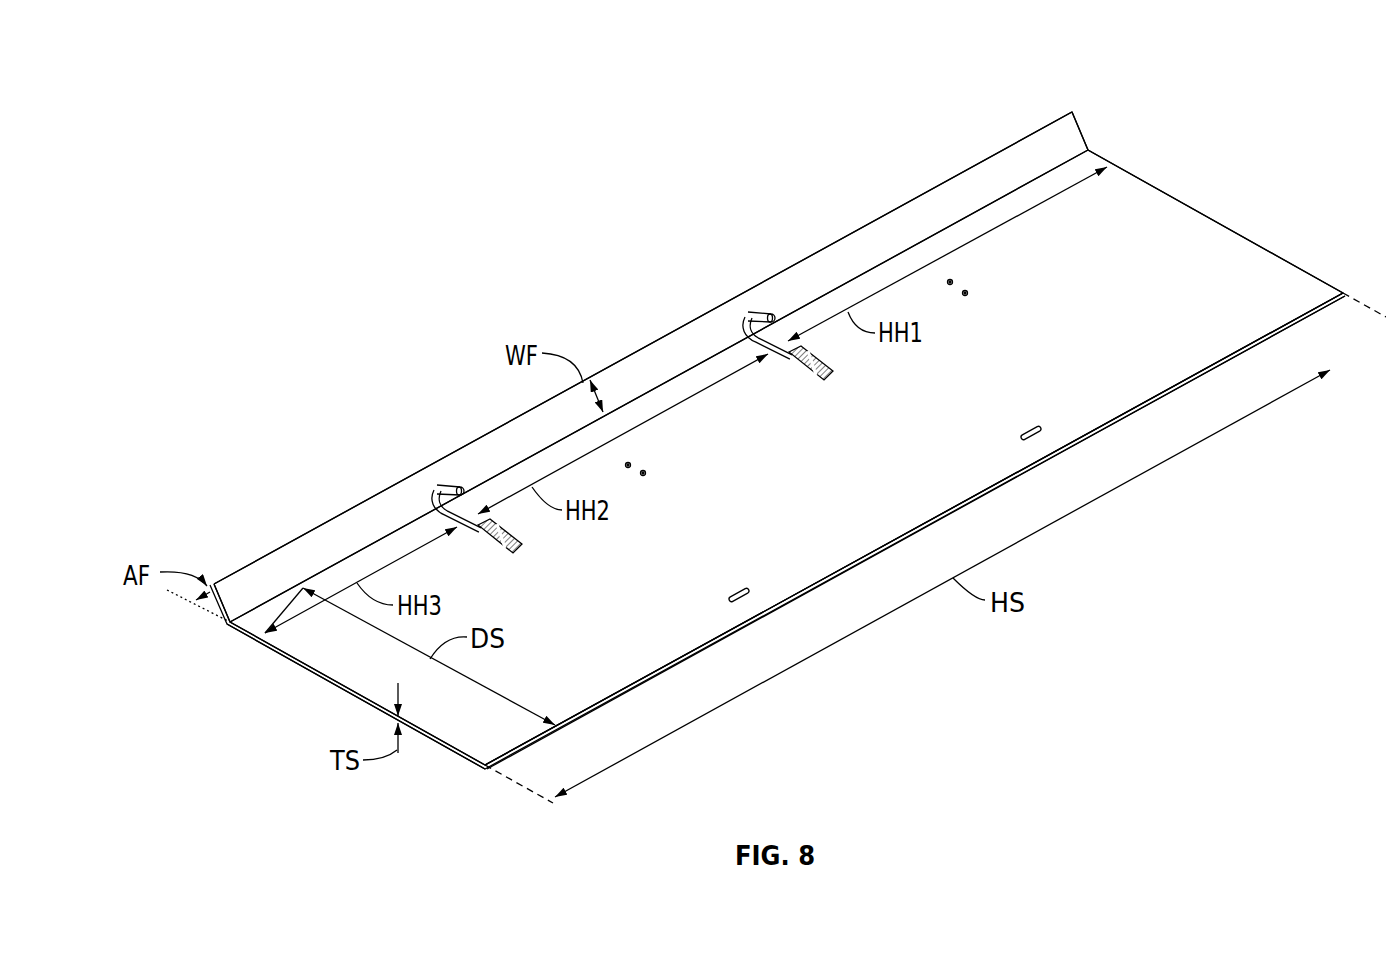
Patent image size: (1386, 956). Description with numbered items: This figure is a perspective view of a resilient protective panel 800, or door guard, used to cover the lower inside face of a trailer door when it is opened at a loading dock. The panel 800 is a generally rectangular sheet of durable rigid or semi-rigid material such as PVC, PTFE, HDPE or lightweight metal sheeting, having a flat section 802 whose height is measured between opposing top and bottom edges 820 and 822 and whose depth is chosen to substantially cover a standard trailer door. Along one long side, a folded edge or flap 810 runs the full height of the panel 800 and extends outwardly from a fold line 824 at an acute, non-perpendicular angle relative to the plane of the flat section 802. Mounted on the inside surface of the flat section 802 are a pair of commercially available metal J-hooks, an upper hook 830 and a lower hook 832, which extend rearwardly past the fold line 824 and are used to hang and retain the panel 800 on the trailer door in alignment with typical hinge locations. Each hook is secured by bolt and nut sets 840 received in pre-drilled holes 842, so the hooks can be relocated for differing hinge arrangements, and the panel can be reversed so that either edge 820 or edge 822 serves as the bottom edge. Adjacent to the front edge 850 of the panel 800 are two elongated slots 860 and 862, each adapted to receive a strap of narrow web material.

The protective panel 800 is at (845, 117).
The flat section 802 is at (931, 462).
The folded edge/flap 810 is at (927, 210).
The top edge 820 is at (330, 683).
The bottom edge 822 is at (1177, 217).
The fold line 824 is at (493, 477).
The upper J-hook 830 is at (437, 485).
The lower J-hook 832 is at (745, 312).
The bolt and nut sets 840 is at (483, 540).
The pre-drilled holes 842 is at (628, 465).
The front edge 850 is at (738, 632).
The elongated slot 860 is at (735, 590).
The elongated slot 862 is at (1027, 425).